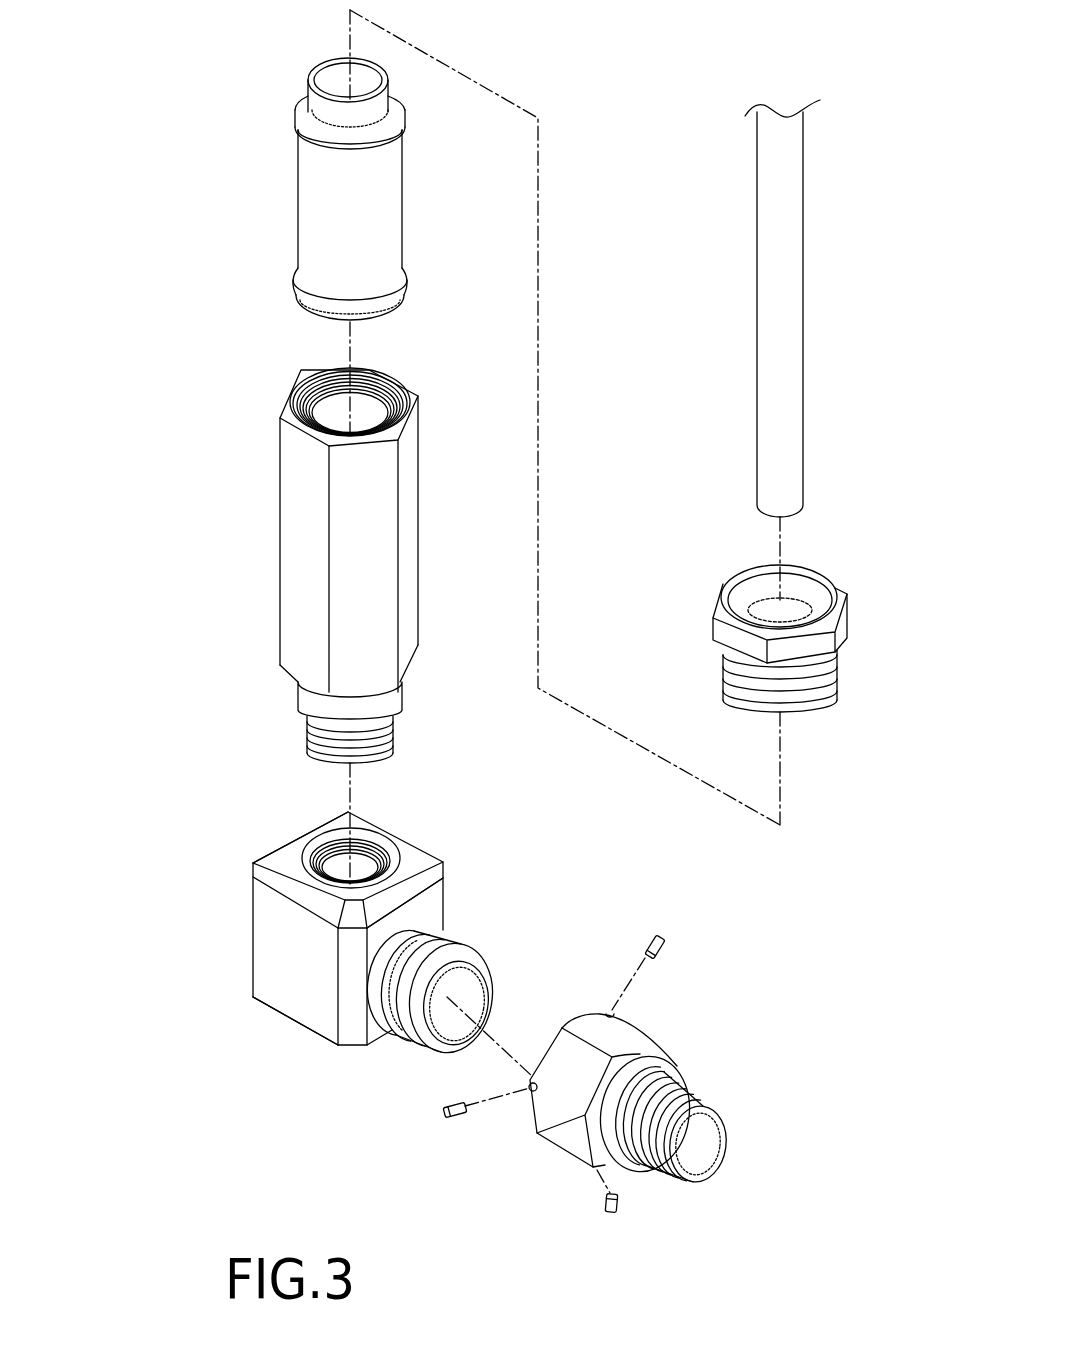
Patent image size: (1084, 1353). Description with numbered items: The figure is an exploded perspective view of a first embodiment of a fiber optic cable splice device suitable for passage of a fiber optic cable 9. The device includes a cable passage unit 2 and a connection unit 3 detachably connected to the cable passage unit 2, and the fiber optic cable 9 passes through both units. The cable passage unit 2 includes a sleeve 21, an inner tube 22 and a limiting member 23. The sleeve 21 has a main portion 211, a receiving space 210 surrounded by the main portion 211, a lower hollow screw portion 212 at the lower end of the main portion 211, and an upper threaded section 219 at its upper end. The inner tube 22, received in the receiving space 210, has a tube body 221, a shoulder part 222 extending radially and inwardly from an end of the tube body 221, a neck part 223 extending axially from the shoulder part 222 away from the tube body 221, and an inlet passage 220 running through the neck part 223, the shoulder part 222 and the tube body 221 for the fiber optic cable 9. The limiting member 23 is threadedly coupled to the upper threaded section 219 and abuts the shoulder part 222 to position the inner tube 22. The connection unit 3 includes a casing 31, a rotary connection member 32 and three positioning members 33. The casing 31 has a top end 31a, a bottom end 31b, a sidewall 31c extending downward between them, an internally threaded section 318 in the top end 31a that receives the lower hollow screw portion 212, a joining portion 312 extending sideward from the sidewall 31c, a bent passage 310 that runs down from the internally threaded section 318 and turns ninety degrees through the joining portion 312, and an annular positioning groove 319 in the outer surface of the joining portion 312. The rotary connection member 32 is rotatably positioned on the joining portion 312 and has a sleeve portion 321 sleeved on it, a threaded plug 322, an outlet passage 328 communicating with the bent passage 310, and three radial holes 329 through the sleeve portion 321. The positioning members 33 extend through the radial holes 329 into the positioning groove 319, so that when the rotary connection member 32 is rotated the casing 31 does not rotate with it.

The cable passage unit 2 is at (615, 87).
The inner tube 22 is at (234, 182).
The inlet passage 220 is at (341, 82).
The tube body 221 is at (308, 213).
The shoulder part 222 is at (310, 118).
The neck part 223 is at (316, 96).
The sleeve 21 is at (246, 510).
The main portion 211 is at (288, 595).
The upper threaded section 219 is at (312, 380).
The receiving space 210 is at (365, 425).
The lower hollow screw portion 212 is at (305, 743).
The limiting member 23 is at (696, 588).
The fiber optic cable 9 is at (795, 271).
The connection unit 3 is at (755, 924).
The casing 31 is at (216, 932).
The bent passage 310 is at (287, 962).
The top end 31a is at (287, 857).
The bottom end 31b is at (290, 1023).
The sidewall 31c is at (413, 907).
The internally threaded section 318 is at (330, 853).
The positioning groove 319 is at (417, 943).
The joining portion 312 is at (447, 998).
The rotary connection member 32 is at (756, 1118).
The sleeve portion 321 is at (630, 1037).
The threaded plug 322 is at (700, 1092).
The outlet passage 328 is at (703, 1143).
The radial holes 329 is at (610, 1013).
The positioning members 33 is at (653, 937).